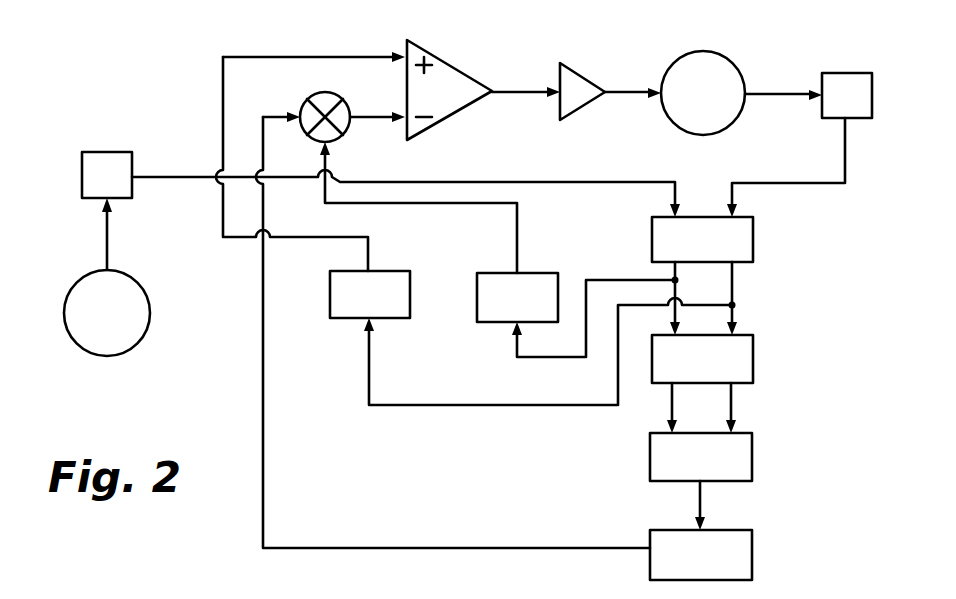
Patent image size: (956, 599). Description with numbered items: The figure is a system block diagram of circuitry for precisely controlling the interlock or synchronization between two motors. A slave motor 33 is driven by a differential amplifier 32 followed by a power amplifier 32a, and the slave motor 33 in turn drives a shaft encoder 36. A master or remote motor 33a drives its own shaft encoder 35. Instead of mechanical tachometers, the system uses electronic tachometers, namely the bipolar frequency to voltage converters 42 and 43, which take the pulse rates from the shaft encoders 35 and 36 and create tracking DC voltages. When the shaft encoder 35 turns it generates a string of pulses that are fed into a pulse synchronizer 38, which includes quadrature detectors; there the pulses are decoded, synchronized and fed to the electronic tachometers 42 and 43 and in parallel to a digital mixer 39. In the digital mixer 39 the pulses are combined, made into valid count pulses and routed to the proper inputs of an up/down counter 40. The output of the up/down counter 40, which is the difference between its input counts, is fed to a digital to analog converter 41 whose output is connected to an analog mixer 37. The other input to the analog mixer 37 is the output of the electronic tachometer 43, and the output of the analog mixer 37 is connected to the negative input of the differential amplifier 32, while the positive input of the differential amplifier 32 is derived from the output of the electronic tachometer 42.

The differential amplifier 32 is at (450, 59).
The power amplifier 32a is at (594, 54).
The slave motor 33 is at (741, 37).
The master or remote motor 33a is at (128, 345).
The shaft encoder 35 is at (106, 152).
The shaft encoder 36 is at (846, 73).
The analog mixer 37 is at (310, 98).
The pulse synchronizer 38 is at (753, 238).
The digital mixer 39 is at (753, 355).
The up/down counter 40 is at (752, 455).
The digital to analog converter 41 is at (752, 553).
The bipolar frequency to voltage converter 42 is at (340, 318).
The bipolar frequency to voltage converter 43 is at (490, 322).